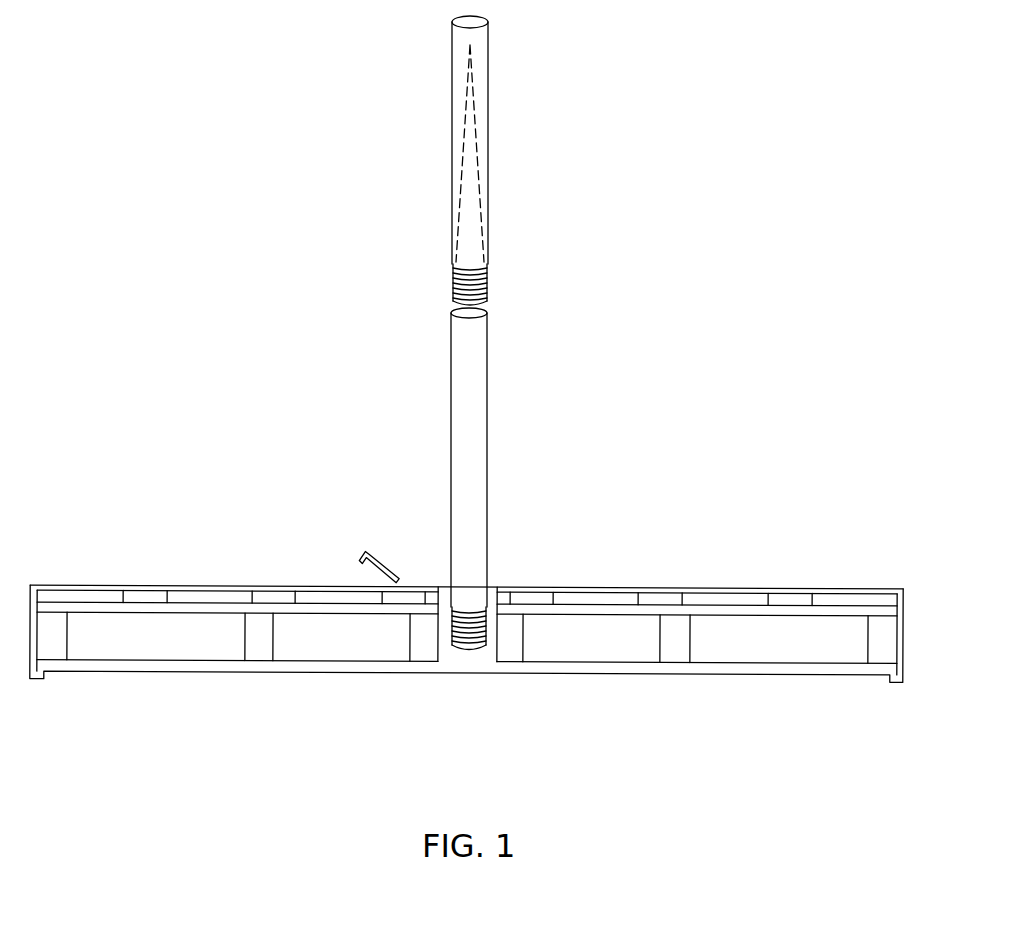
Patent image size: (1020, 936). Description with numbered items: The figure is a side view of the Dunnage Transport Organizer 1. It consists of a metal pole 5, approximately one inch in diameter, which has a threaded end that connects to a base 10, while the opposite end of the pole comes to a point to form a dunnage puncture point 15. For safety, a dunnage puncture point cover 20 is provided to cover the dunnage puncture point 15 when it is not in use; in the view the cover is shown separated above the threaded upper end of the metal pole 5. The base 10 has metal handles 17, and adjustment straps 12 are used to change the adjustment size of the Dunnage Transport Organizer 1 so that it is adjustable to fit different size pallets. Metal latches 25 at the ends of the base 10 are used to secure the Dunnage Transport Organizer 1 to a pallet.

The Dunnage Transport Organizer 1 is at (287, 292).
The metal pole 5 is at (487, 334).
The base 10 is at (517, 587).
The adjustment straps 12 is at (733, 587).
The dunnage puncture point 15 is at (470, 102).
The metal handles 17 is at (378, 555).
The dunnage puncture point cover 20 is at (452, 65).
The metal latches 25 is at (123, 673).